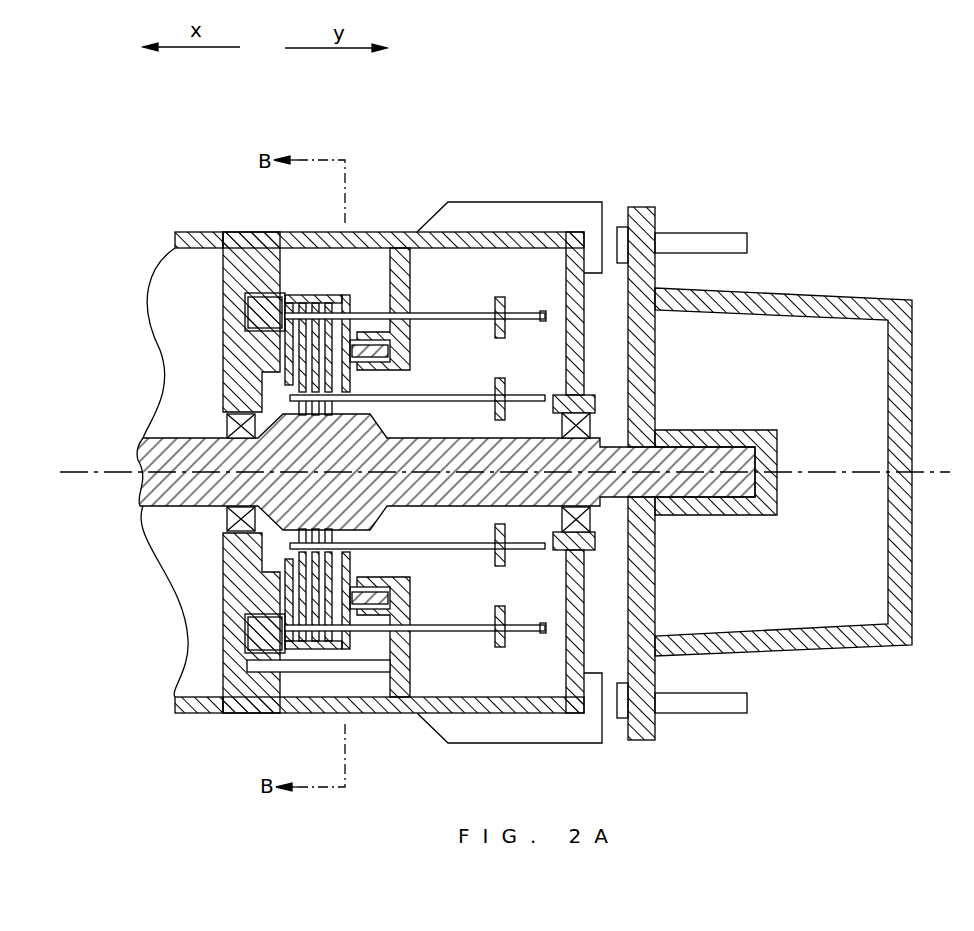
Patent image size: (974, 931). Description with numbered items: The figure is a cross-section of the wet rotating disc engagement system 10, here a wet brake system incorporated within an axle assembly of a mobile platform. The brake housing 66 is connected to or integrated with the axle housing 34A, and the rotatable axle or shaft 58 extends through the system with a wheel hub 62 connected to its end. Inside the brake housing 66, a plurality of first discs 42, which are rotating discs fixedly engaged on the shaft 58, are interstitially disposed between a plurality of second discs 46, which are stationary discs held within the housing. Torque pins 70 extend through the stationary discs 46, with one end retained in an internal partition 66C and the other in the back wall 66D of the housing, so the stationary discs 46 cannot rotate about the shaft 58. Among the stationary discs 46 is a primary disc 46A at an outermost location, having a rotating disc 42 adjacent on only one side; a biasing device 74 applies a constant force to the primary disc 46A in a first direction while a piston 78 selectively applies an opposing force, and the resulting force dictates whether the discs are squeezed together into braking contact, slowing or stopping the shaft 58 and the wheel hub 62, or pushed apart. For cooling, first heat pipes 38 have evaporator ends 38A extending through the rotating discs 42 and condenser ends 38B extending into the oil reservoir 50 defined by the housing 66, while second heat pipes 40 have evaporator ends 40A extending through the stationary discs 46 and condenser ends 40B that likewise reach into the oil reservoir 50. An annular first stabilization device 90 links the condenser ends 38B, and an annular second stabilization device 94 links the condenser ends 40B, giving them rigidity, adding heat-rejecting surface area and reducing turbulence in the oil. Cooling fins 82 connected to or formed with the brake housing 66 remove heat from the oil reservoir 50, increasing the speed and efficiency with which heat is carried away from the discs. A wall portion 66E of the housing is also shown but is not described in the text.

The wet rotating disc engagement system 10 is at (468, 133).
The axle housing 34A is at (203, 240).
The first heat pipes 38 is at (418, 395).
The evaporator ends 38A is at (240, 420).
The condenser ends 38B is at (545, 395).
The second heat pipes 40 is at (440, 313).
The evaporator ends 40A is at (290, 335).
The condenser ends 40B is at (542, 300).
The first discs 42 is at (331, 362).
The second discs 46 is at (335, 300).
The primary disc 46A is at (358, 233).
The oil reservoir 50 is at (542, 273).
The shaft 58 is at (187, 452).
The wheel hub 62 is at (838, 300).
The brake housing 66 is at (330, 233).
The internal partition 66C is at (410, 285).
The back wall 66D is at (225, 650).
The housing end wall 66E is at (575, 348).
The torque pins 70 is at (373, 713).
The biasing device 74 is at (380, 342).
The piston 78 is at (250, 305).
The cooling fins 82 is at (567, 222).
The first heat pipe condenser end stabilization device 90 is at (502, 378).
The second heat pipe condenser end stabilization device 94 is at (497, 297).